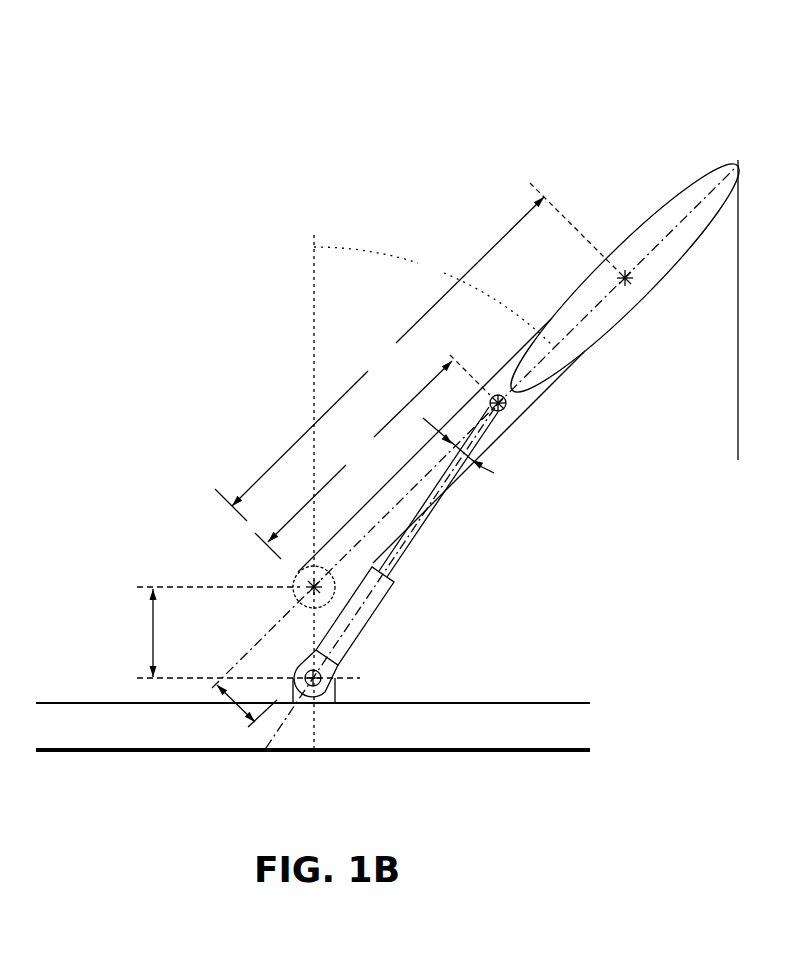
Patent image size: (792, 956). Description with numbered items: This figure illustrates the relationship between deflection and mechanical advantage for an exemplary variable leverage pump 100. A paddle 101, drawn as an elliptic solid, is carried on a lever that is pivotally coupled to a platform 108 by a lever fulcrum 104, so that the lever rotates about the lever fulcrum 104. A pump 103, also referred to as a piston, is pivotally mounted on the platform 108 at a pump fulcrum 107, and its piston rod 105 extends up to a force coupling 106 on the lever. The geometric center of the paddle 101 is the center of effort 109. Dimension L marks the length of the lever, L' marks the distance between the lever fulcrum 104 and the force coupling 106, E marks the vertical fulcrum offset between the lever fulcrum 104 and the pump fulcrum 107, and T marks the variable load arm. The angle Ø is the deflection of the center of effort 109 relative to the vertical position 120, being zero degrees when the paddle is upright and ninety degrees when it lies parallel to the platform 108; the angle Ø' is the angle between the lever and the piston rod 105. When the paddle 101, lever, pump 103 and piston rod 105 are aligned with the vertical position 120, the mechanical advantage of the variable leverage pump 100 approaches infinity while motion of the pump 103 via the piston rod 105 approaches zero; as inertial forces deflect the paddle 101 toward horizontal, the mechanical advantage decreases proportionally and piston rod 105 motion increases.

The variable leverage pump 100 is at (341, 23).
The paddle 101 is at (688, 273).
The pump 103 is at (362, 628).
The lever fulcrum 104 is at (294, 587).
The piston rod 105 is at (418, 542).
The force coupling 106 is at (520, 410).
The pump fulcrum 107 is at (322, 678).
The platform 108 is at (548, 702).
The center of effort 109 is at (636, 287).
The vertical position 120 is at (397, 479).